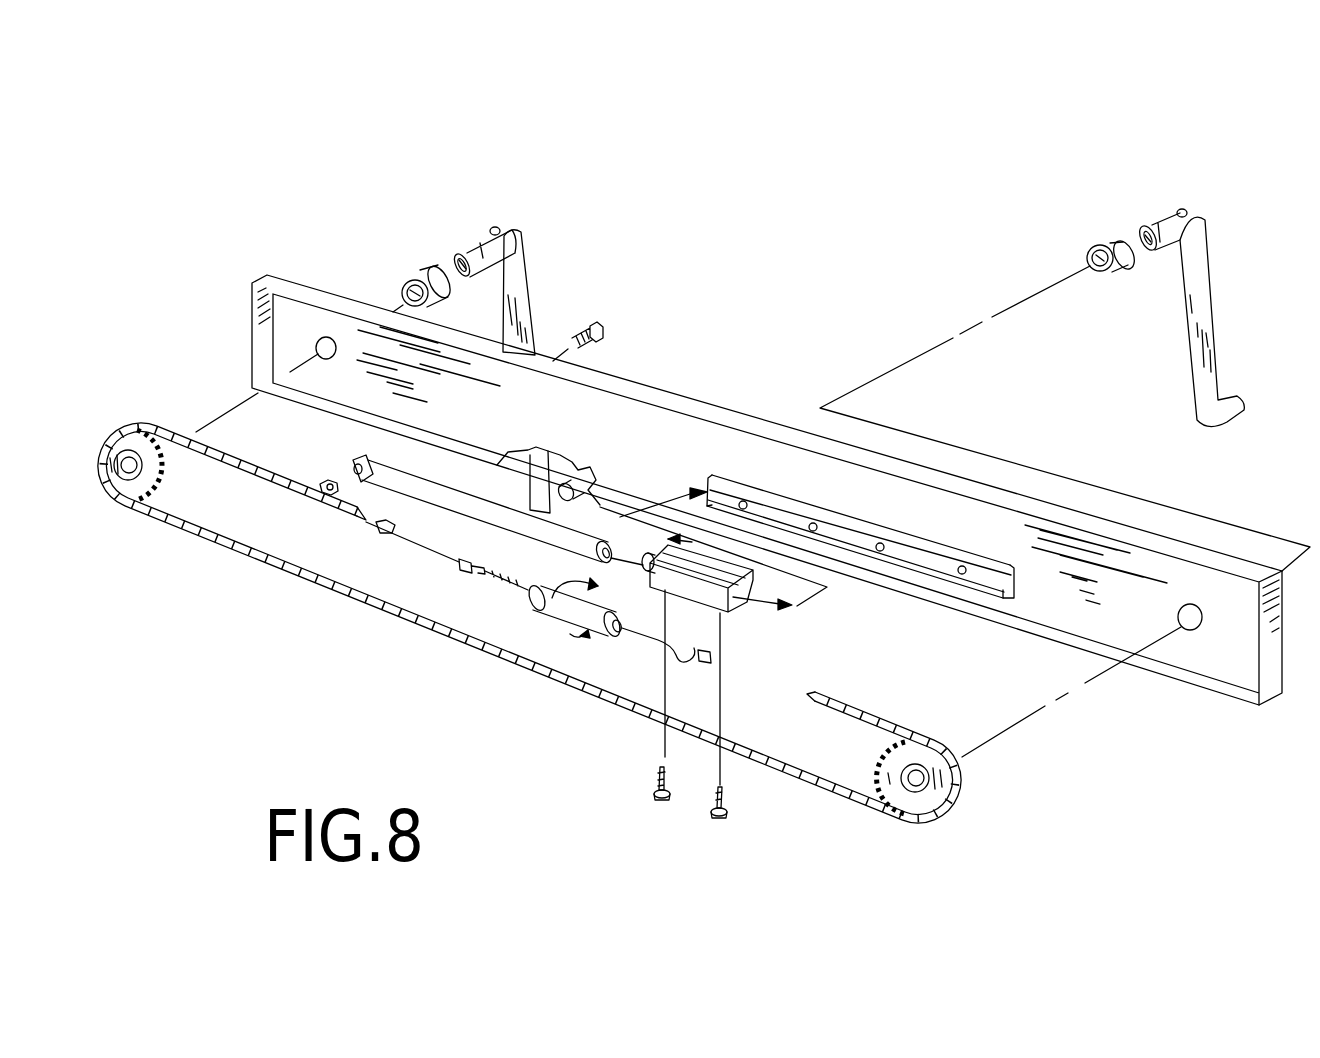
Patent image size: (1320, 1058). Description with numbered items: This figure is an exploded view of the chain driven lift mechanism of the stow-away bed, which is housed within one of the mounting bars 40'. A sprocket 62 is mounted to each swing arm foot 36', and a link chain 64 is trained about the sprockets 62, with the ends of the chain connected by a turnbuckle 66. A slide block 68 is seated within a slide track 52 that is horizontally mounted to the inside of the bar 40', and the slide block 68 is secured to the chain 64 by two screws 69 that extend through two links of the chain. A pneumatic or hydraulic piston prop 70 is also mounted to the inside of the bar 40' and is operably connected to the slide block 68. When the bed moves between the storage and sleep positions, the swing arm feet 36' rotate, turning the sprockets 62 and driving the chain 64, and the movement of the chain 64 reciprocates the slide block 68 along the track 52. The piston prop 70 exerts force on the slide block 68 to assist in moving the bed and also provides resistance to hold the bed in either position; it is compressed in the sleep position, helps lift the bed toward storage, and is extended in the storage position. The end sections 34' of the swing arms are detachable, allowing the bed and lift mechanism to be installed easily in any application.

The end section 34' is at (896, 321).
The swing arm foot 36' is at (790, 227).
The mounting bar 40' is at (753, 468).
The slide track 52 is at (935, 560).
The sprocket 62 is at (133, 445).
The link chain 64 is at (220, 462).
The turnbuckle 66 is at (560, 605).
The slide block 68 is at (757, 603).
The screw 69 is at (660, 772).
The piston prop 70 is at (462, 498).